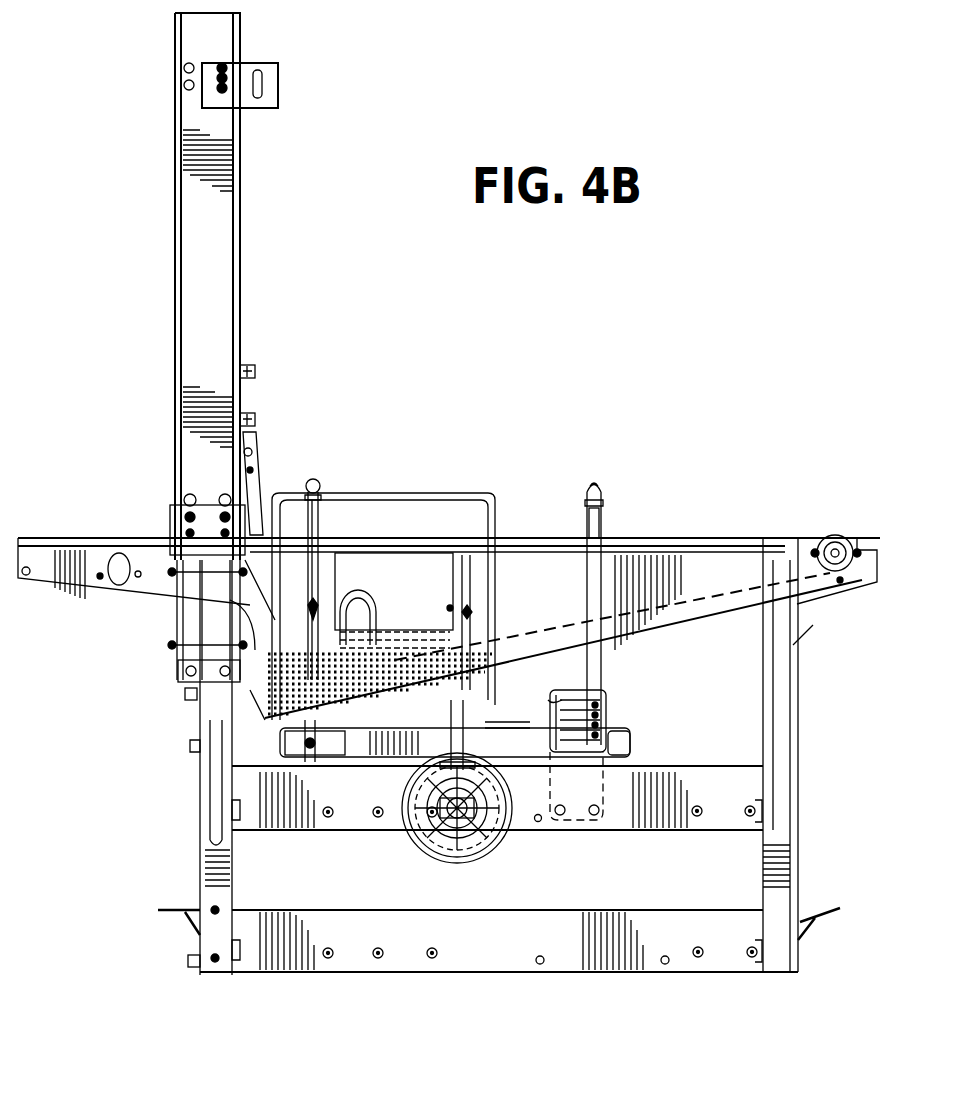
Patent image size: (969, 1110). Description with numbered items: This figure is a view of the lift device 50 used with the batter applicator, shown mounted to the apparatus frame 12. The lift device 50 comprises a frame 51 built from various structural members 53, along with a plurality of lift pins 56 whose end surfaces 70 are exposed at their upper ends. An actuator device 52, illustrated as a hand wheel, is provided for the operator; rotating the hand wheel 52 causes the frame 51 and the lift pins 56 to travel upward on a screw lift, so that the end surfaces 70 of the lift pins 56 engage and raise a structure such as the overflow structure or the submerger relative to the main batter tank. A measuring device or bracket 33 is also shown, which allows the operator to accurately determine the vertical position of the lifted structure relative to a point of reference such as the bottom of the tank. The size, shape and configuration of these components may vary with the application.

The frame 12 is at (200, 868).
The measuring device or bracket 33 is at (562, 700).
The lift device 50 is at (624, 712).
The frame 51 is at (498, 722).
The actuator device 52 is at (432, 852).
The structural members 53 is at (285, 742).
The lift pins 56 is at (605, 522).
The end surfaces 70 is at (314, 478).